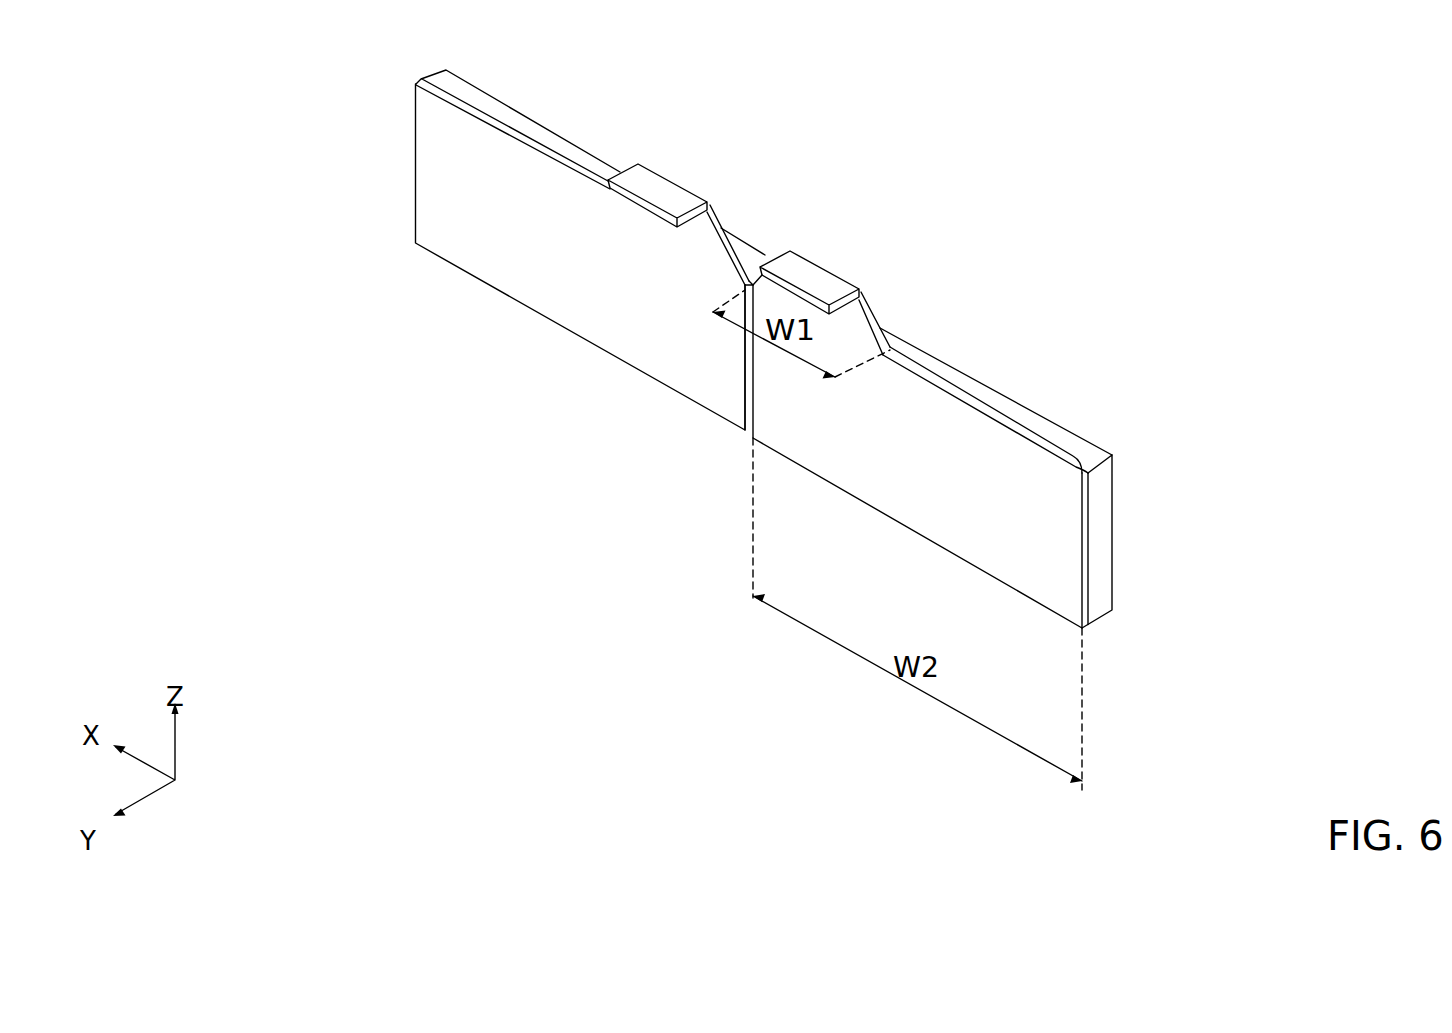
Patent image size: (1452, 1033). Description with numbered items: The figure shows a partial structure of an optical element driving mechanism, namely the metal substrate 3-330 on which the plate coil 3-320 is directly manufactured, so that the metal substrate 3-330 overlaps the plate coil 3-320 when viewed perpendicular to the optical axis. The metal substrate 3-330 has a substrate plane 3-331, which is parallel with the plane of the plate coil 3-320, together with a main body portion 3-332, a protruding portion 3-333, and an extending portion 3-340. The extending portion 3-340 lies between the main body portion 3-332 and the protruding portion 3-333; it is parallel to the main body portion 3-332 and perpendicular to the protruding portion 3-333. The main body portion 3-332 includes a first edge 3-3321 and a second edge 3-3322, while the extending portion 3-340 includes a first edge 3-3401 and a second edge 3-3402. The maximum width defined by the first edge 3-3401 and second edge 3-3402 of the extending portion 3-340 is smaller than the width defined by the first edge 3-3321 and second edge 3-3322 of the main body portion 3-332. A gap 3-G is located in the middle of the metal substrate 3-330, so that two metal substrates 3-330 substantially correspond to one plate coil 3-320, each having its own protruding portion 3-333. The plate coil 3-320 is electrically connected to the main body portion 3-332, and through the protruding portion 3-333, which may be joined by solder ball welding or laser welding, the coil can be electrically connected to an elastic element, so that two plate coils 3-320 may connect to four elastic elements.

The metal substrate 3-330 is at (851, 356).
The substrate plane 3-331 is at (585, 275).
The main body portion 3-332 is at (705, 258).
The protruding portion 3-333 is at (657, 195).
The extending portion 3-340 is at (968, 278).
The first edge 3-3401 is at (884, 332).
The second edge 3-3402 is at (753, 282).
The plate coil 3-320 is at (968, 372).
The first edge 3-3321 is at (1085, 520).
The second edge 3-3322 is at (745, 383).
The gap 3-G is at (750, 427).